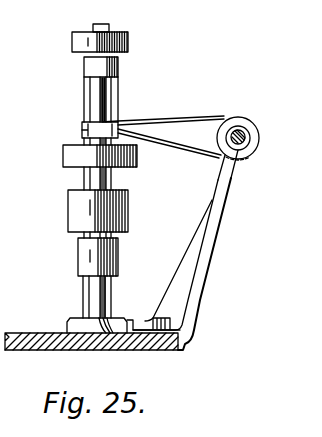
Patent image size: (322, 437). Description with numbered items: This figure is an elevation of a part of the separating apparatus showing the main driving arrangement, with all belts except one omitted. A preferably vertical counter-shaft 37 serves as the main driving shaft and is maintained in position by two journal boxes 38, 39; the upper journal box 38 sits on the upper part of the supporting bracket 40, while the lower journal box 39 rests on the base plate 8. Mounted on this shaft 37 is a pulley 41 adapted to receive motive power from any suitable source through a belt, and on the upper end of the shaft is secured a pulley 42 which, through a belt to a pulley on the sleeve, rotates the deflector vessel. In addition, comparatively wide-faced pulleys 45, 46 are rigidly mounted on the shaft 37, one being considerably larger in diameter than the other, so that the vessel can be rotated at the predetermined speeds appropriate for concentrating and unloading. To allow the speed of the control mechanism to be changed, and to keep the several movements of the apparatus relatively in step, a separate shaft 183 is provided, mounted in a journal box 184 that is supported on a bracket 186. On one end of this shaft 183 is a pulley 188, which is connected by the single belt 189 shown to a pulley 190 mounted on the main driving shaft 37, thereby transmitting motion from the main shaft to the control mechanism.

The base plate 8 is at (35, 333).
The counter-shaft 37 is at (99, 90).
The journal box 38 is at (84, 66).
The journal box 39 is at (107, 320).
The supporting bracket 40 is at (84, 107).
The pulley 41 is at (63, 160).
The pulley 42 is at (72, 37).
The wide faced pulley 45 is at (68, 213).
The wide faced pulley 46 is at (78, 266).
The shaft 183 is at (237, 131).
The journal box 184 is at (246, 158).
The bracket 186 is at (215, 242).
The pulley 188 is at (257, 117).
The belt 189 is at (180, 118).
The pulley 190 is at (112, 120).